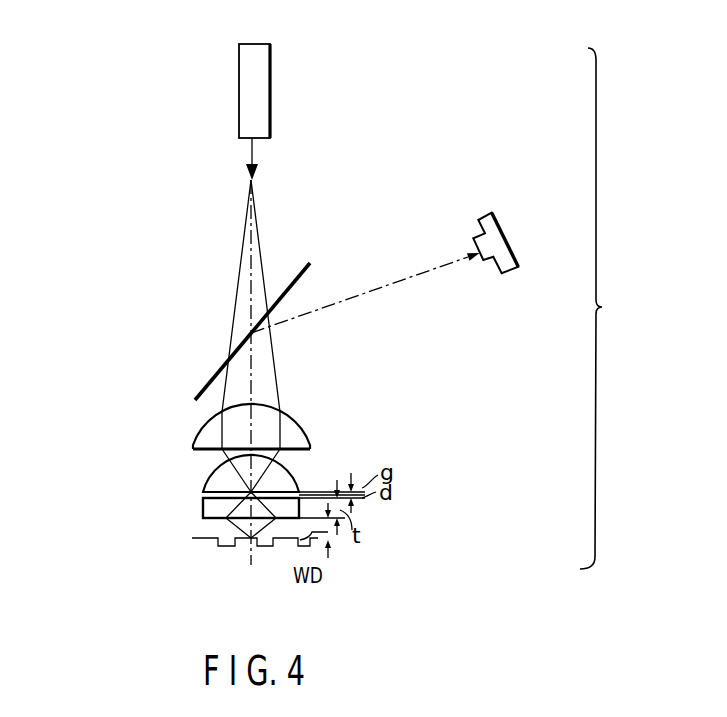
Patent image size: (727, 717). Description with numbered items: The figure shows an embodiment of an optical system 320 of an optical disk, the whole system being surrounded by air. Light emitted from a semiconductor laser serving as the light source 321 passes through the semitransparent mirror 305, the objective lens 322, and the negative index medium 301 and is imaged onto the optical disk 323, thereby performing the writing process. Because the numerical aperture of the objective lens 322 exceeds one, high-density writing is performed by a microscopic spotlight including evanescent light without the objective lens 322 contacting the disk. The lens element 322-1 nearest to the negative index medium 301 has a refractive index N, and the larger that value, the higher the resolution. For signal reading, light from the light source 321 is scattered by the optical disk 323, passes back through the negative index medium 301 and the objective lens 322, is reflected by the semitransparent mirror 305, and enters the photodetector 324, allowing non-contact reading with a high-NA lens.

The optical system 320 is at (609, 308).
The light source 321 is at (262, 73).
The semitransparent mirror 305 is at (205, 386).
The photodetector 324 is at (508, 268).
The objective lens 322 is at (262, 448).
The optical element nearest to the negative index medium 322-1 is at (297, 478).
The negative index medium 301 is at (203, 510).
The optical disk 323 is at (193, 539).